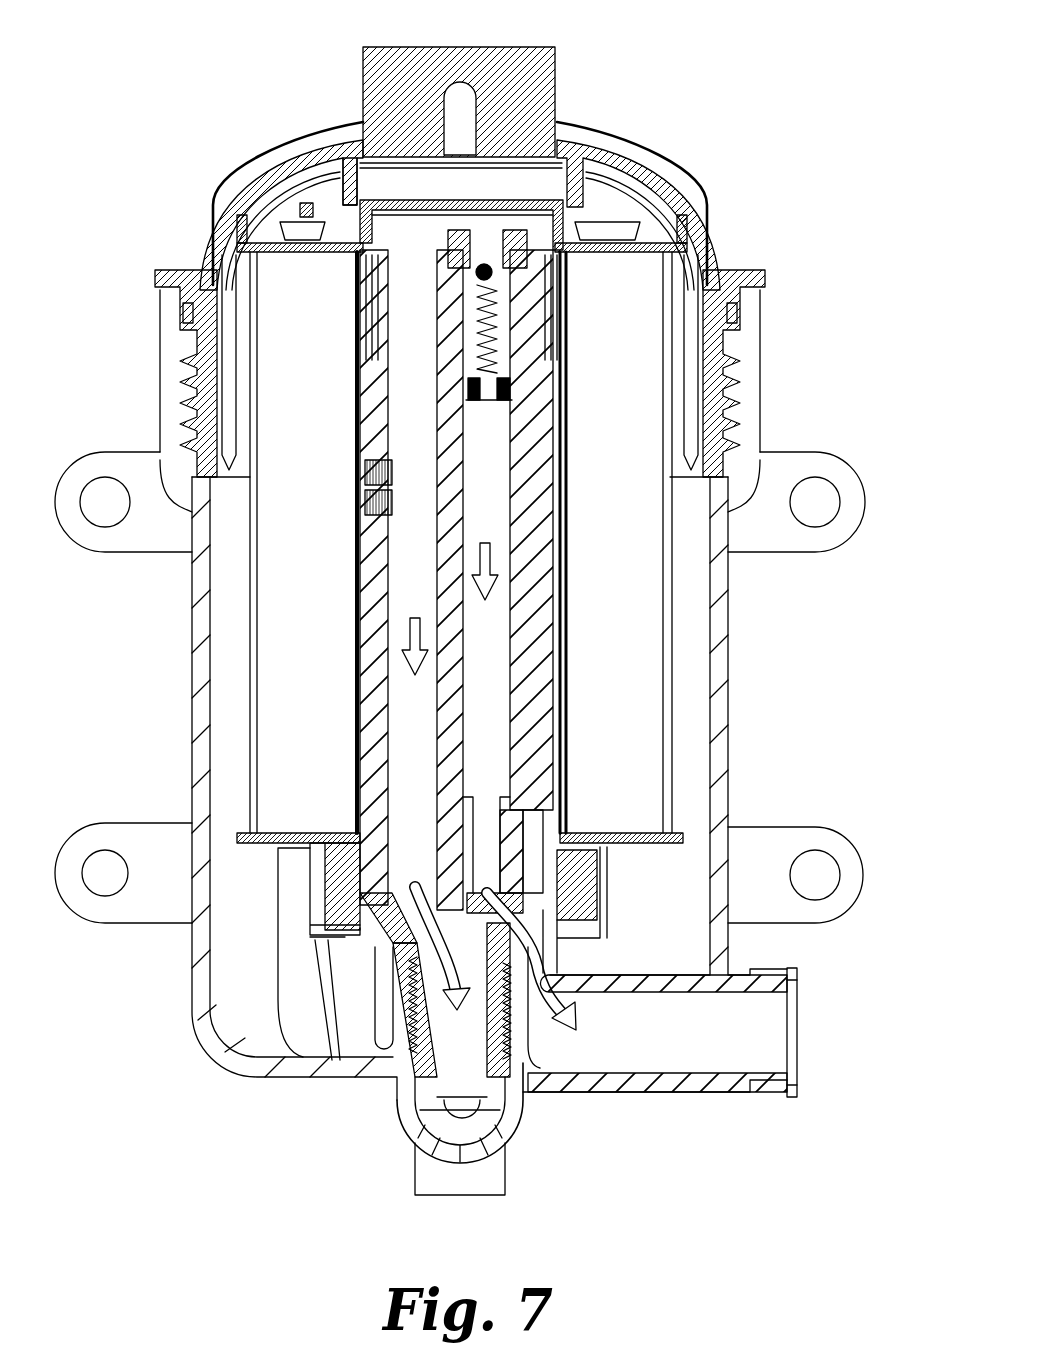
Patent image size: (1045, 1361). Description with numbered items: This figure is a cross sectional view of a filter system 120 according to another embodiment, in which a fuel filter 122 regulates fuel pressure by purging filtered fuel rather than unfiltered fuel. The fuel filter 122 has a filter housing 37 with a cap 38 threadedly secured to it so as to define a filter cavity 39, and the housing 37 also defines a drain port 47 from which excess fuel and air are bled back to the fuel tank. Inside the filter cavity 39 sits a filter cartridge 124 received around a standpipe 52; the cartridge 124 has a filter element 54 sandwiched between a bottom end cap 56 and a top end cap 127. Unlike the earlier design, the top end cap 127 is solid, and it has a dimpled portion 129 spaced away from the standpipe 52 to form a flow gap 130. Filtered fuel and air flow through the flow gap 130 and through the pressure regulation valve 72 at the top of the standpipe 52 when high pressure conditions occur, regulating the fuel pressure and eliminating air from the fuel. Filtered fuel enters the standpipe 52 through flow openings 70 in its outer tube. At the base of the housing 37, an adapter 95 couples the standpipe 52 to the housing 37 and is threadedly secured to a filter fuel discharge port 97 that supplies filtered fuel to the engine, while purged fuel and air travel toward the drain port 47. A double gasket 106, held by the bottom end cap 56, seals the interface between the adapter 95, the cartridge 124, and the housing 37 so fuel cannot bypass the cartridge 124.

The filter system 120 is at (476, 605).
The flow gap 130 is at (461, 103).
The pressure regulation valve 72 is at (344, 134).
The dimpled portion 129 is at (487, 152).
The cap 38 is at (474, 194).
The top end cap 127 is at (668, 213).
The filter cartridge 124 is at (766, 373).
The fuel filter 122 is at (813, 401).
The flow openings 70 is at (355, 442).
The standpipe 52 is at (490, 581).
The filter element 54 is at (514, 547).
The filter cavity 39 is at (536, 542).
The filter housing 37 is at (530, 788).
The bottom end cap 56 is at (700, 805).
The double gasket 106 is at (286, 889).
The adapter 95 is at (411, 1029).
The filter fuel discharge port 97 is at (475, 1078).
The drain port 47 is at (660, 1076).